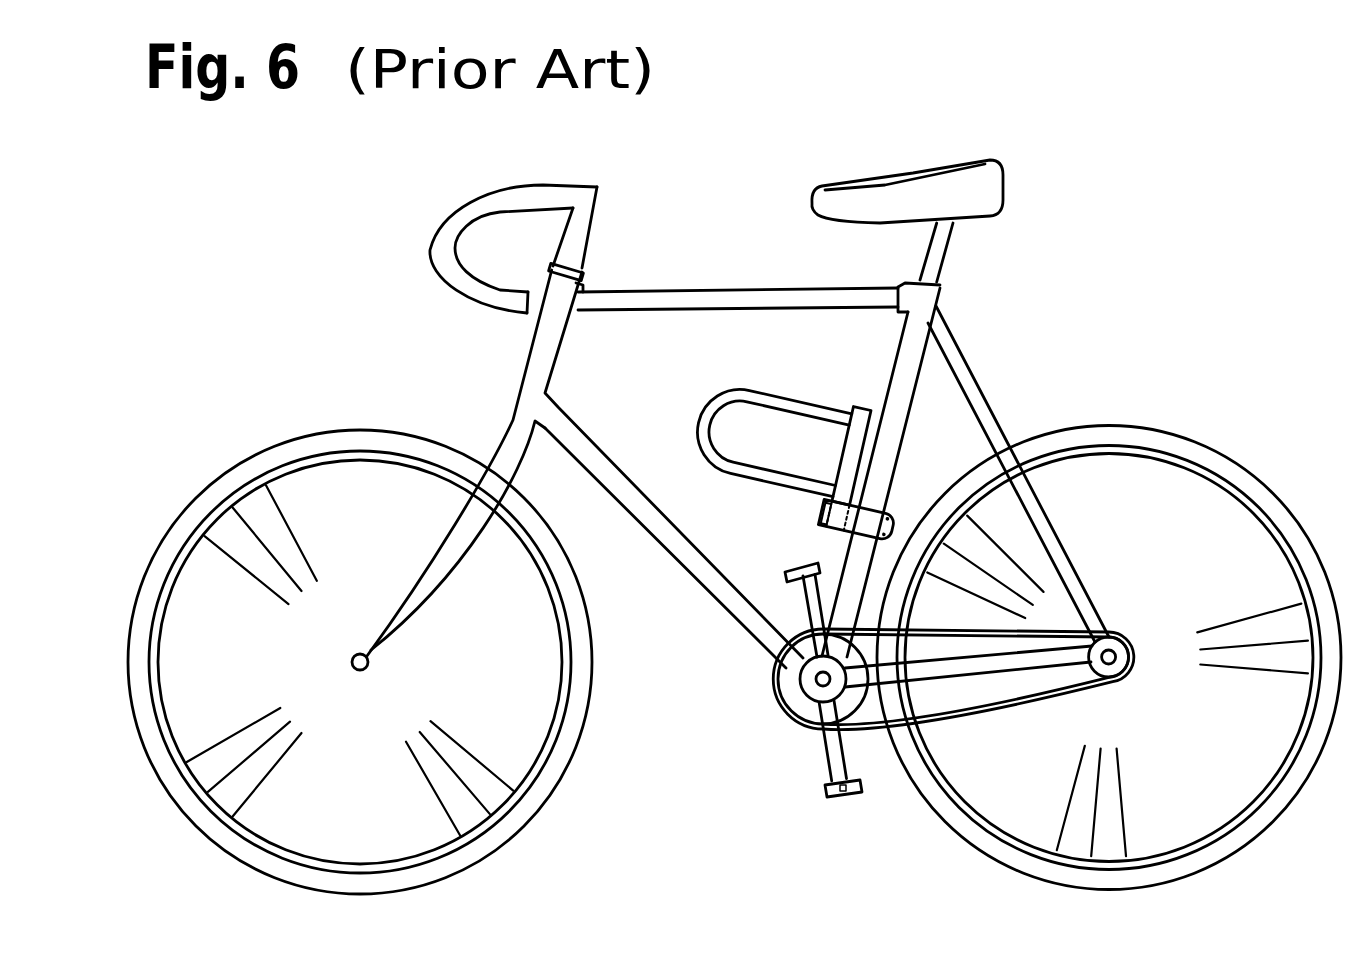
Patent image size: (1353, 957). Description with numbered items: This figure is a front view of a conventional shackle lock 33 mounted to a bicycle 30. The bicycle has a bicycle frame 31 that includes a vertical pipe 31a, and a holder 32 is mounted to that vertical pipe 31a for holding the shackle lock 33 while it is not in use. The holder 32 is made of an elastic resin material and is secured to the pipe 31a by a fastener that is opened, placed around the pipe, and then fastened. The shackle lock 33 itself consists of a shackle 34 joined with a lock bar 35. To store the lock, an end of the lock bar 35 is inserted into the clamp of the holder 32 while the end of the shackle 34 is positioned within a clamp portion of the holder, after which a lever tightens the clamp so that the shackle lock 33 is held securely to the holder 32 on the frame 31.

The bicycle 30 is at (732, 167).
The bicycle frame 31 is at (702, 290).
The vertical pipe 31a is at (898, 372).
The holder 32 is at (886, 509).
The shackle lock 33 is at (751, 420).
The shackle 34 is at (697, 437).
The lock bar 35 is at (846, 456).